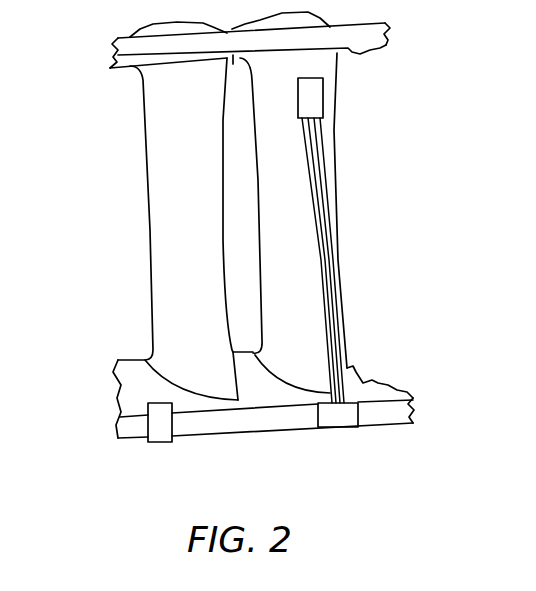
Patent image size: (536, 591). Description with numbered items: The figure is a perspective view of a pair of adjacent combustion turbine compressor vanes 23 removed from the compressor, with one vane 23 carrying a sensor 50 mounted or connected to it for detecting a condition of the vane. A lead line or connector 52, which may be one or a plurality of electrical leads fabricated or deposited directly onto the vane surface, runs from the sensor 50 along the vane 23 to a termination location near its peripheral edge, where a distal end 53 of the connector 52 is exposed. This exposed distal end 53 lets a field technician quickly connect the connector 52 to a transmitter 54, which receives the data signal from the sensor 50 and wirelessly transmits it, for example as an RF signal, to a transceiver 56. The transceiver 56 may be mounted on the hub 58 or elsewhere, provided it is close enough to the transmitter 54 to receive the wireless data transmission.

The vane 23 is at (268, 143).
The sensor 50 is at (323, 98).
The connector 52 is at (325, 293).
The distal end 53 is at (363, 383).
The transmitter 54 is at (338, 413).
The transceiver 56 is at (158, 428).
The hub 58 is at (137, 378).